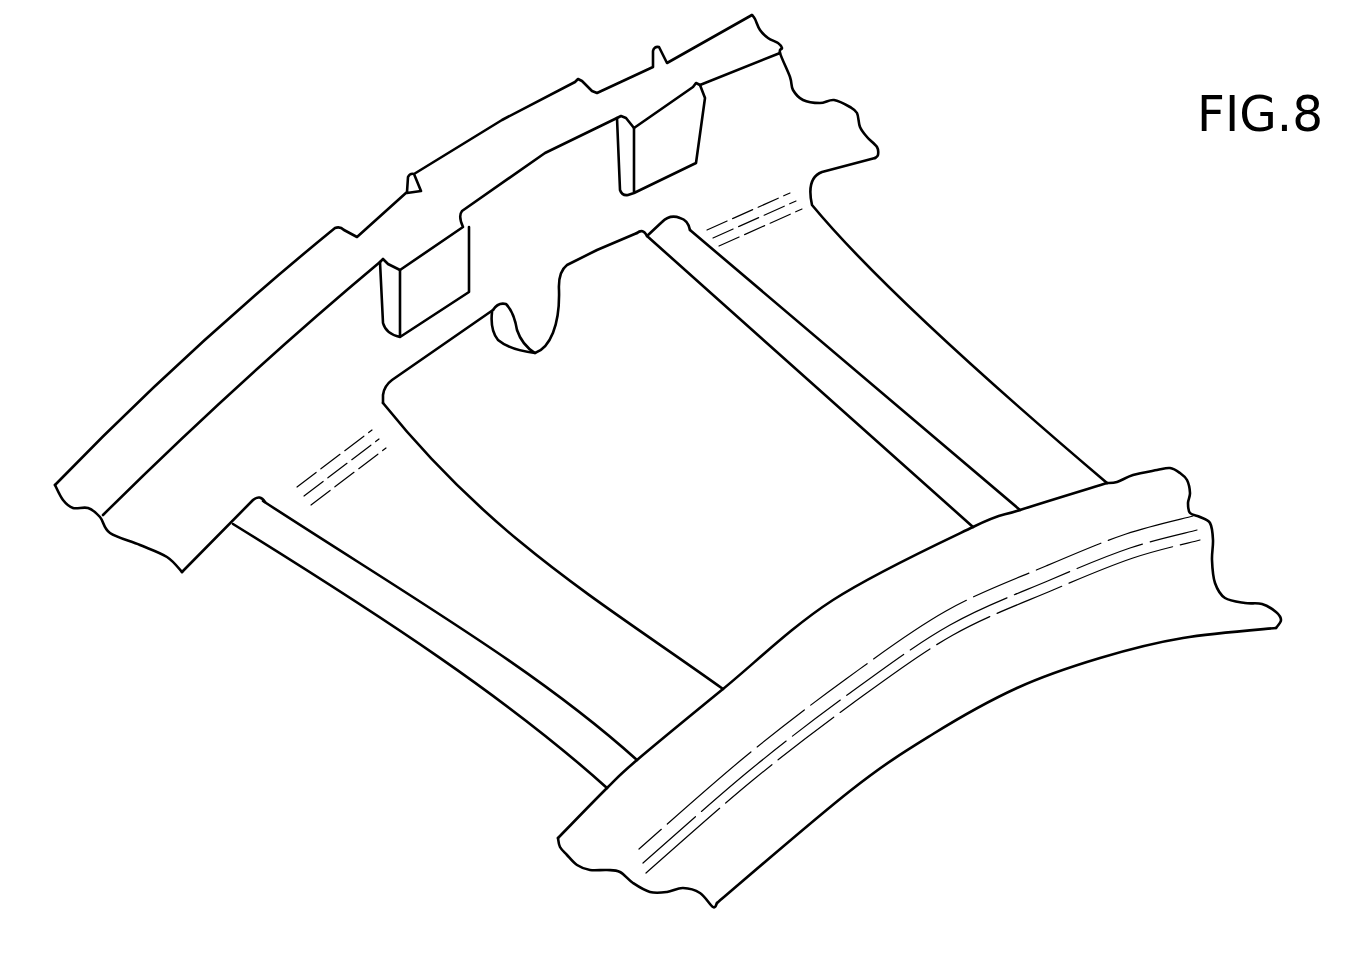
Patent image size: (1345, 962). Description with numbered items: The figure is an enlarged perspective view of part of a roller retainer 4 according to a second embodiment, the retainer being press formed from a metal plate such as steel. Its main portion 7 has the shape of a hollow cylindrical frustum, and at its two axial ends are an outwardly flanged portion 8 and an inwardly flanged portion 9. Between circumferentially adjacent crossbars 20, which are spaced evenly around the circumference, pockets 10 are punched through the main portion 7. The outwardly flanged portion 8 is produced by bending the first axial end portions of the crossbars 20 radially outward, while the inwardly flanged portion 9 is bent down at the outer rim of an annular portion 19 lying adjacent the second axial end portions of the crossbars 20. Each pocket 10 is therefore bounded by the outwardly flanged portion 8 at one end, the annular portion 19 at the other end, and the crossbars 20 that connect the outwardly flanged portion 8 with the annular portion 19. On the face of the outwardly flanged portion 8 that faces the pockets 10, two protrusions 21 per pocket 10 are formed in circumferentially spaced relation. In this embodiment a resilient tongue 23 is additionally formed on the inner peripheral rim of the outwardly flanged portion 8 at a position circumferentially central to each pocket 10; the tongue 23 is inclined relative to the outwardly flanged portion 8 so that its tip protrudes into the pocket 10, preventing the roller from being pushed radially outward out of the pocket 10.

The retainer 4 is at (370, 191).
The main portion 7 is at (861, 290).
The outwardly flanged portion 8 is at (210, 343).
The inwardly flanged portion 9 is at (860, 715).
The pocket 10 is at (1023, 407).
The annular portion 19 is at (880, 618).
The crossbar 20 is at (453, 482).
The protrusion 21 is at (437, 277).
The resilient tongue 23 is at (545, 339).